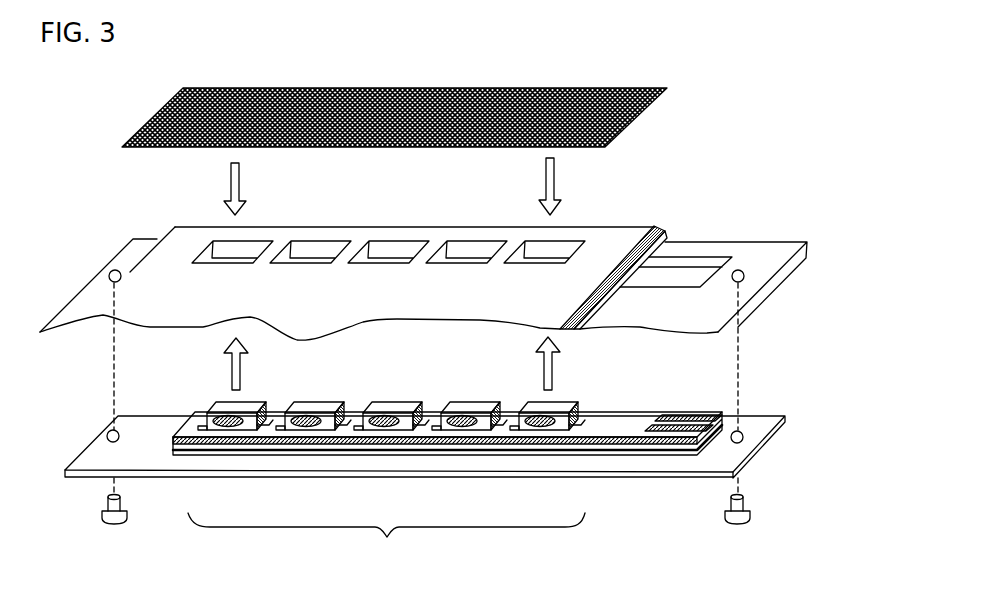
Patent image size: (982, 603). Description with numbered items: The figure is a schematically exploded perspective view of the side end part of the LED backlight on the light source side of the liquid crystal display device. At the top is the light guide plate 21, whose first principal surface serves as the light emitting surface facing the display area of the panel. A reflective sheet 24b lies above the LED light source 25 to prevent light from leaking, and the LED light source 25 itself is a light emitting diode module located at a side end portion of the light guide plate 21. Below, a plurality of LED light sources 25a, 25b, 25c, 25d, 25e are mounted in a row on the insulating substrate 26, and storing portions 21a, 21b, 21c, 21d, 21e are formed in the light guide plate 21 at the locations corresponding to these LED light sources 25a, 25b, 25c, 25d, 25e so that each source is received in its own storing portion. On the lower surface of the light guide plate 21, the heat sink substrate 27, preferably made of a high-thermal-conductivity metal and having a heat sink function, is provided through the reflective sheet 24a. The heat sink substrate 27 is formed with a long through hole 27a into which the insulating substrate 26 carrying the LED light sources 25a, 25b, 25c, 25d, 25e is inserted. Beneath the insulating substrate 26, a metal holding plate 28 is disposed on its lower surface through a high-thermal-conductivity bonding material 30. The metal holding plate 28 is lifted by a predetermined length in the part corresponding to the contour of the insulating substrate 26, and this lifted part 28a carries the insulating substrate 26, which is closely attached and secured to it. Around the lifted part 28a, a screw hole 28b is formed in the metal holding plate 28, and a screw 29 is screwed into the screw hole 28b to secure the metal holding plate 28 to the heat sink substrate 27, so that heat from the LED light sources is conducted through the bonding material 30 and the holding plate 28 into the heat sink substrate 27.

The light guide plate 21 is at (147, 267).
The storing portion 21a is at (260, 241).
The storing portion 21b is at (330, 241).
The storing portion 21c is at (405, 241).
The storing portion 21d is at (485, 241).
The storing portion 21e is at (578, 241).
The reflective sheet 24a is at (607, 308).
The reflective sheet 24b is at (382, 88).
The LED light source 25 is at (386, 543).
The LED light source 25a is at (228, 431).
The LED light source 25b is at (306, 431).
The LED light source 25c is at (384, 431).
The LED light source 25d is at (462, 431).
The LED light source 25e is at (540, 431).
The insulating substrate 26 is at (635, 418).
The heat sink substrate 27 is at (735, 244).
The long through hole 27a is at (672, 278).
The metal holding plate 28 is at (757, 420).
The lifted part 28a is at (682, 450).
The screw hole 28b is at (743, 437).
The screw 29 is at (750, 518).
The high-thermal-conductivity bonding material 30 is at (643, 441).